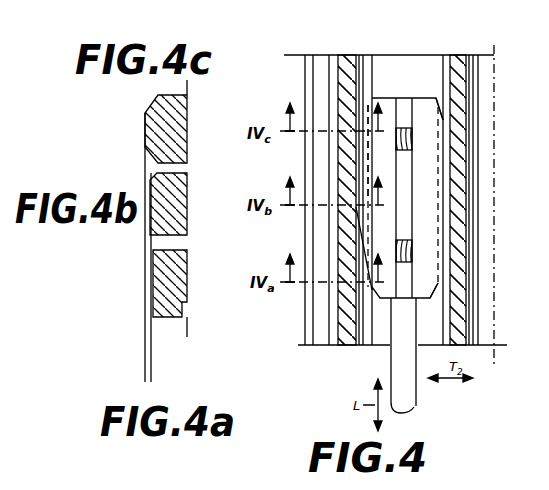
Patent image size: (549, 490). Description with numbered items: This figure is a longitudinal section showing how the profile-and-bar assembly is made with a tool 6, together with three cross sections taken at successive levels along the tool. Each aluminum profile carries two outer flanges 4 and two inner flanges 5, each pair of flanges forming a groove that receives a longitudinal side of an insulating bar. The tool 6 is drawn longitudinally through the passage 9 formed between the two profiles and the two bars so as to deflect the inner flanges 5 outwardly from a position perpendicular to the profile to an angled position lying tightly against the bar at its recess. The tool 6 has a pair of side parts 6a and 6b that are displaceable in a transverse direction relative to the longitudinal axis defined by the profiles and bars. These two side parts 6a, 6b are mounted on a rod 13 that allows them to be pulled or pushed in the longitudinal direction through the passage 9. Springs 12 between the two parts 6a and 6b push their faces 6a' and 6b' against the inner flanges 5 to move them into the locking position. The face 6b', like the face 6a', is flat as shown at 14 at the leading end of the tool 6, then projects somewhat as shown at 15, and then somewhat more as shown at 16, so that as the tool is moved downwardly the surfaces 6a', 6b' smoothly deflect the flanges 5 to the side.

In FIG. 4, the outer flange 4 is at (333, 66).
In FIG. 4, the inner flange 5 is at (347, 70).
In FIG. 4, the tool 6 is at (381, 98).
In FIG. 4, the side part 6a is at (479, 125).
In FIG. 4, the face 6a' is at (480, 228).
In FIG. 4, the side part 6b is at (329, 152).
In FIG. 4, the face 6b' is at (320, 248).
In FIG. 4, the passage 9 is at (378, 66).
In FIG. 4, the spring 12 is at (398, 128).
In FIG. 4, the rod 13 is at (398, 359).
In FIG. 4a, the flat portion of face 14 is at (180, 293).
In FIG. 4b, the projecting portion of face 15 is at (177, 208).
In FIG. 4c, the further projecting portion of face 16 is at (157, 127).